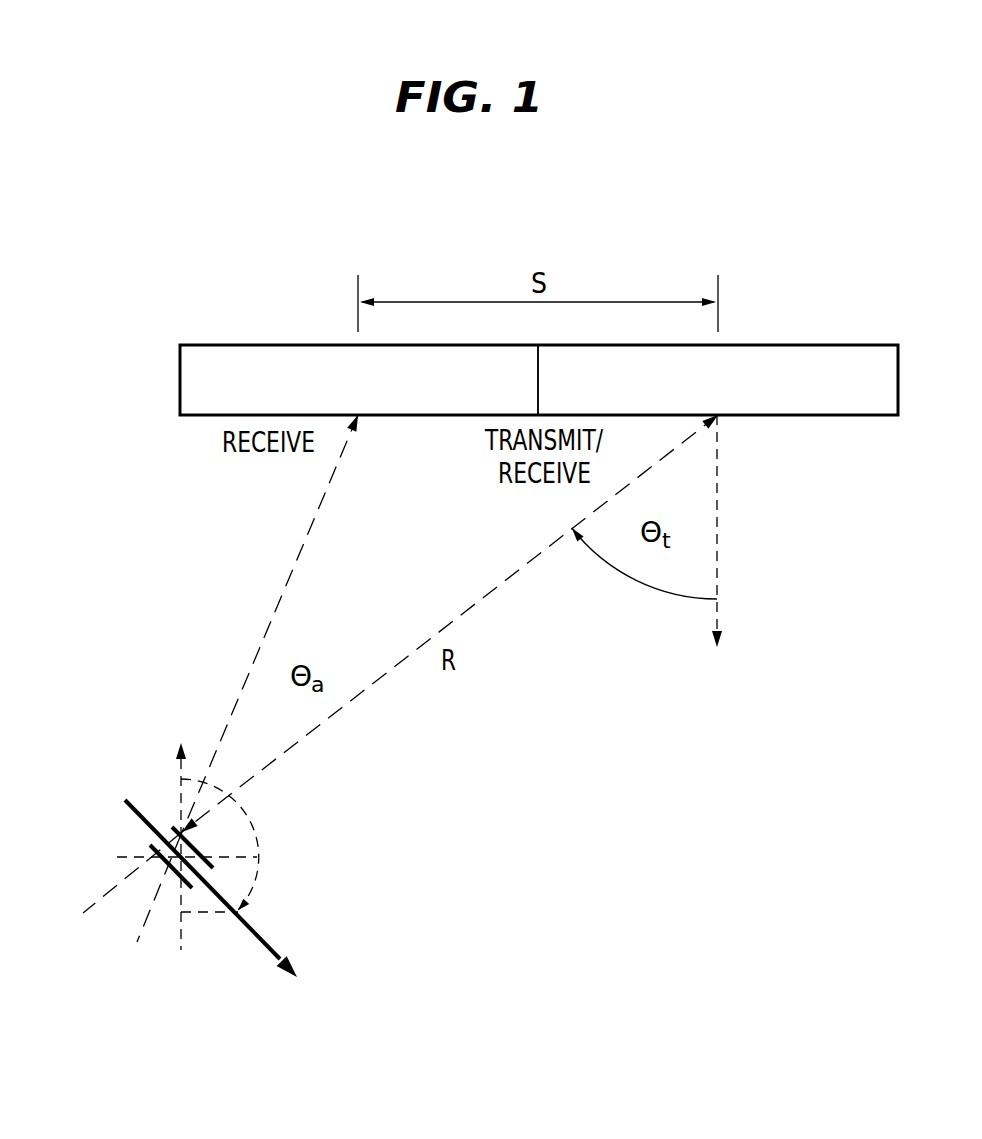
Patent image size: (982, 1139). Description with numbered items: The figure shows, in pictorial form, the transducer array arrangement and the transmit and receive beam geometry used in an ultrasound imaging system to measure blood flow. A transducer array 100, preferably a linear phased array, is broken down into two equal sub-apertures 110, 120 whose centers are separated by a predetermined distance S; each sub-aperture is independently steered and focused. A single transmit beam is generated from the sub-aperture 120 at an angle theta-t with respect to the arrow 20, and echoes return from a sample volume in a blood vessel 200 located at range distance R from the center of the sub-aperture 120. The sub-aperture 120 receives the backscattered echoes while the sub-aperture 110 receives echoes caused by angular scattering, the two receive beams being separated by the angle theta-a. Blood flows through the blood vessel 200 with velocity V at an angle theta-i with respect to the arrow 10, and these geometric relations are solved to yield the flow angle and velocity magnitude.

The transducer array 100 is at (180, 357).
The sub-aperture 110 is at (249, 345).
The sub-aperture 120 is at (850, 345).
The arrow 20 is at (739, 533).
The arrow 10 is at (178, 757).
The blood vessel 200 is at (150, 852).